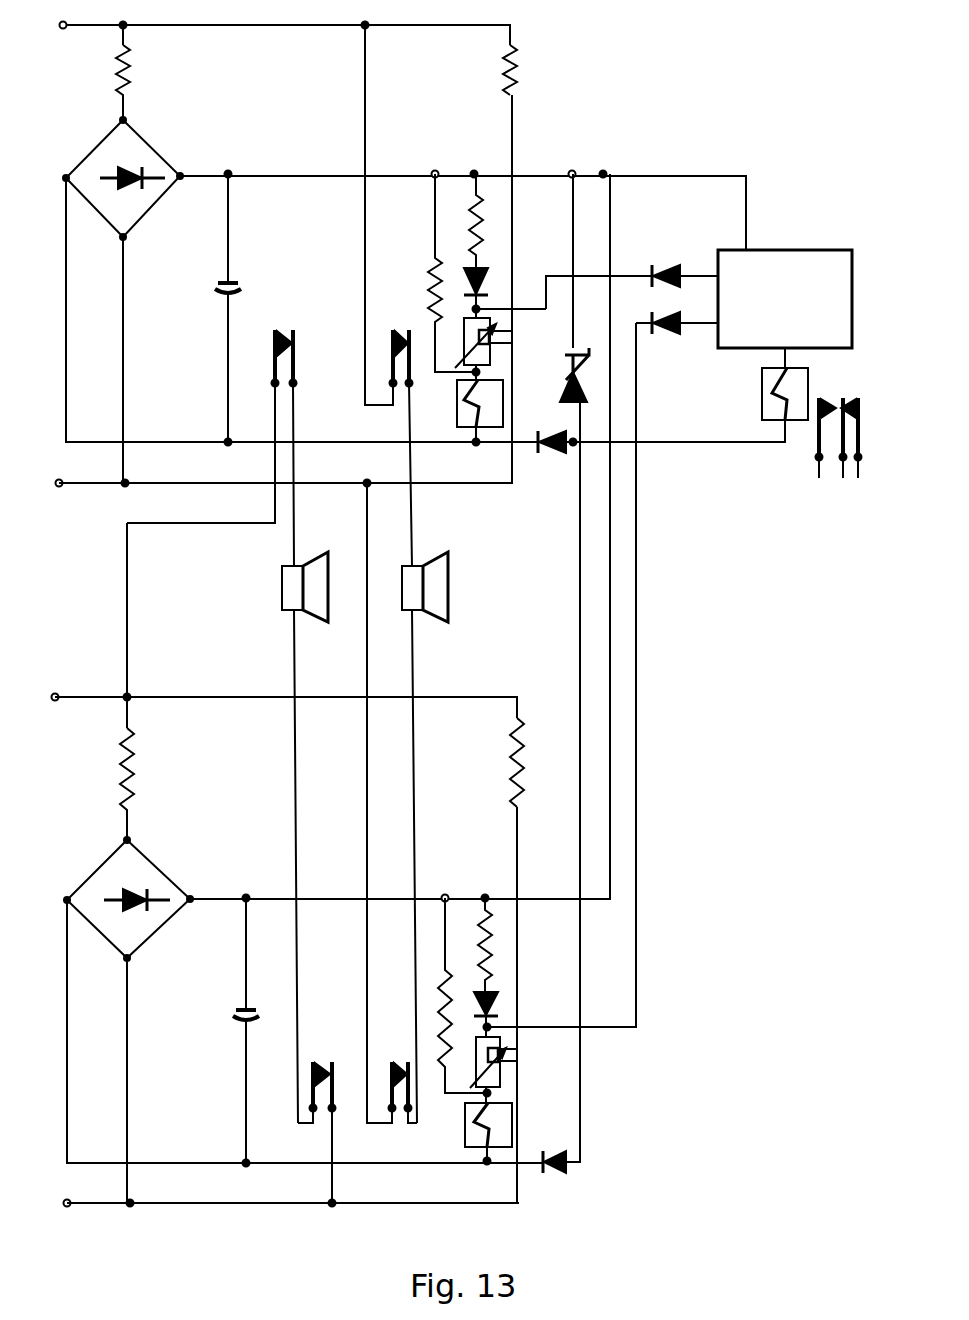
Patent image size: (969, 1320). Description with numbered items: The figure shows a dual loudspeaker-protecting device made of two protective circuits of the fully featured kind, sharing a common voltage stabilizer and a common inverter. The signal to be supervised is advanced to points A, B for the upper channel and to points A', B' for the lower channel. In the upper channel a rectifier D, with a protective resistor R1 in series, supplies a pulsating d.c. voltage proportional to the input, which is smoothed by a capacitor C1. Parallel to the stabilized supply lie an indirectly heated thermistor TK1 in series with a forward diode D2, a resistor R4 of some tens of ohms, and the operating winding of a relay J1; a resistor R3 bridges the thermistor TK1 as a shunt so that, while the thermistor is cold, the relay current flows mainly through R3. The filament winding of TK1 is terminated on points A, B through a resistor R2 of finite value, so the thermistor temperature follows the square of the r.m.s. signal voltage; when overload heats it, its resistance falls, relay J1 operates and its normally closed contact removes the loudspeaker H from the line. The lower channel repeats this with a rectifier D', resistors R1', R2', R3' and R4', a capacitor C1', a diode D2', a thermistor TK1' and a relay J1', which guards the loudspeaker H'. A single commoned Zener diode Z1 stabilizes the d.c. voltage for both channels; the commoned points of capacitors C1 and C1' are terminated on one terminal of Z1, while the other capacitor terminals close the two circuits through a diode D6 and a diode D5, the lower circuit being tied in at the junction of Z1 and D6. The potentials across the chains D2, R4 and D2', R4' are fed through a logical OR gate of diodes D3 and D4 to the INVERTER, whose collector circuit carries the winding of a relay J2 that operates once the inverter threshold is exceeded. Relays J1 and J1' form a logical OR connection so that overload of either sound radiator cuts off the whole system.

The input point A is at (51, 26).
The input point B is at (48, 484).
The input point of the second channel A' is at (44, 699).
The input point of the second channel B' is at (53, 1204).
The resistor R1 is at (104, 82).
The resistor R2 is at (527, 70).
The resistor R3 is at (439, 273).
The resistor R4 is at (460, 221).
The rectifier D is at (123, 178).
The capacitor C1 is at (212, 308).
The diode D2 is at (467, 293).
The diode D3 is at (667, 257).
The diode D4 is at (667, 342).
The diode D5 is at (557, 1179).
The diode D6 is at (554, 459).
The indirectly heated thermistor TK1 is at (508, 349).
The relay J1 is at (465, 411).
The relay J2 is at (770, 394).
The Zener diode Z1 is at (567, 375).
The logical NO-function pulse inverter INVERTER is at (785, 299).
The loudspeaker H is at (436, 753).
The loudspeaker H' is at (319, 753).
The resistor R1' is at (113, 784).
The resistor R2' is at (536, 762).
The resistor R3' is at (452, 995).
The resistor R4' is at (472, 945).
The rectifier D' is at (128, 899).
The capacitor C1' is at (227, 1030).
The diode D2' is at (504, 1011).
The indirectly heated thermistor TK1' is at (522, 1070).
The relay J1' is at (474, 1132).